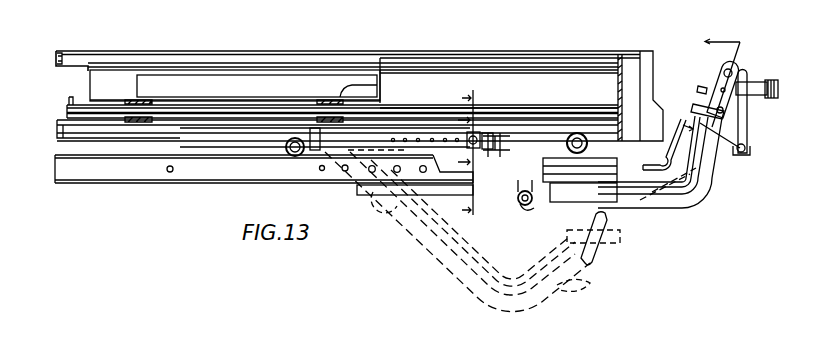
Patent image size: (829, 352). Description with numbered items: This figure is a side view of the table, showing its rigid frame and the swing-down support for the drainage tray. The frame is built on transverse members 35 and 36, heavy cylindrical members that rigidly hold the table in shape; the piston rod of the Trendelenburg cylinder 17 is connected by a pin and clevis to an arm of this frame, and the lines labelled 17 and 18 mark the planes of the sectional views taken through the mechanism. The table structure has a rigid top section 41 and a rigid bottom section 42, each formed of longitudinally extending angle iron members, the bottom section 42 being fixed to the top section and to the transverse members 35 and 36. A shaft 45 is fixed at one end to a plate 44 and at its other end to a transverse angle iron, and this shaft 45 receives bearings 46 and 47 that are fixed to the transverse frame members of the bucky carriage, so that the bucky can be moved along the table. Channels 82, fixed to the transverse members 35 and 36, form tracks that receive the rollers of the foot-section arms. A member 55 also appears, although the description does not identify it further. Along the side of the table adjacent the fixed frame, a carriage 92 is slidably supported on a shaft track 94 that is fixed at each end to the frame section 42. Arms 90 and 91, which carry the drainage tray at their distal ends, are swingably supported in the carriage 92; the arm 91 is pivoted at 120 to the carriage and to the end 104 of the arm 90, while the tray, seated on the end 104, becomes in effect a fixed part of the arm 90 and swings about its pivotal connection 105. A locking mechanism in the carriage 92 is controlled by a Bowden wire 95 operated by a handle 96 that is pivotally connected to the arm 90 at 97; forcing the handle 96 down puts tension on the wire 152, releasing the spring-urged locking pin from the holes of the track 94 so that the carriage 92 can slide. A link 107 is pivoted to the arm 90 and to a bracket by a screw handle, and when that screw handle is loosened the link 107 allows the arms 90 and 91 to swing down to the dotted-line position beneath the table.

The Trendelenburg cylinder 17 is at (471, 153).
The section line 18- 18 is at (704, 74).
The transverse member 35 is at (589, 147).
The transverse member 36 is at (284, 151).
The top section 41 is at (57, 55).
The bottom section 42 is at (57, 129).
The plate 44 is at (622, 97).
The shaft 45 is at (499, 89).
The bearing 46 is at (377, 86).
The bearing 47 is at (130, 100).
The slide member 55 is at (268, 78).
The channels 82 is at (108, 183).
The arm 90 is at (708, 185).
The arm 91 is at (668, 184).
The carriage 92 is at (518, 199).
The shaft track 94 is at (425, 137).
The Bowden wire 95 is at (672, 170).
The handle 96 is at (770, 80).
The pivotal connection 97 is at (723, 89).
The end of the arm 104 is at (726, 69).
The pivotal connection 105 is at (527, 208).
The link 107 is at (749, 150).
The pivot 120 is at (495, 153).
The wire 152 is at (698, 90).